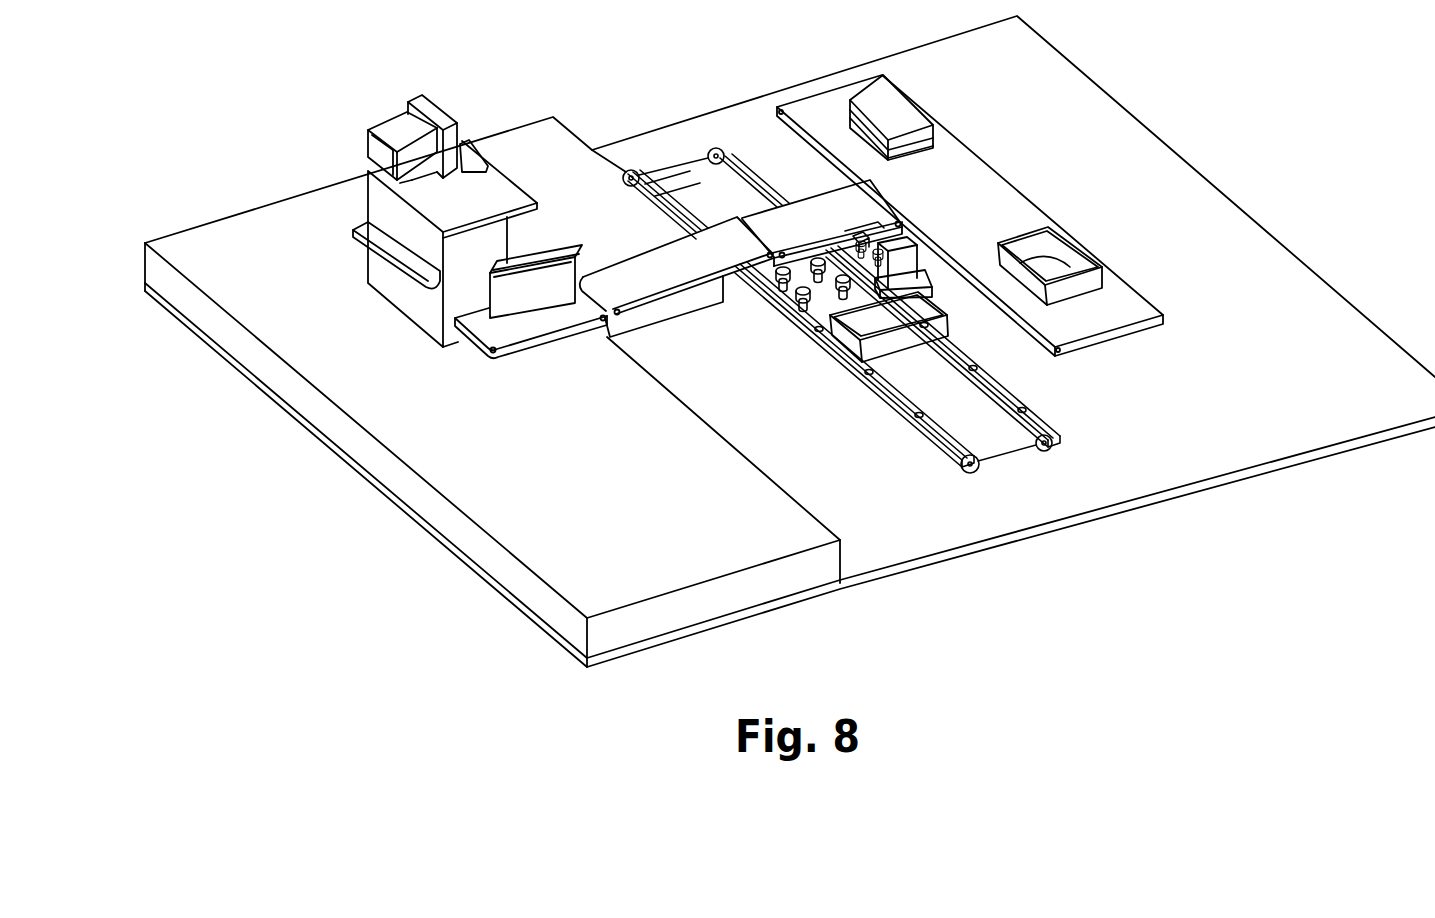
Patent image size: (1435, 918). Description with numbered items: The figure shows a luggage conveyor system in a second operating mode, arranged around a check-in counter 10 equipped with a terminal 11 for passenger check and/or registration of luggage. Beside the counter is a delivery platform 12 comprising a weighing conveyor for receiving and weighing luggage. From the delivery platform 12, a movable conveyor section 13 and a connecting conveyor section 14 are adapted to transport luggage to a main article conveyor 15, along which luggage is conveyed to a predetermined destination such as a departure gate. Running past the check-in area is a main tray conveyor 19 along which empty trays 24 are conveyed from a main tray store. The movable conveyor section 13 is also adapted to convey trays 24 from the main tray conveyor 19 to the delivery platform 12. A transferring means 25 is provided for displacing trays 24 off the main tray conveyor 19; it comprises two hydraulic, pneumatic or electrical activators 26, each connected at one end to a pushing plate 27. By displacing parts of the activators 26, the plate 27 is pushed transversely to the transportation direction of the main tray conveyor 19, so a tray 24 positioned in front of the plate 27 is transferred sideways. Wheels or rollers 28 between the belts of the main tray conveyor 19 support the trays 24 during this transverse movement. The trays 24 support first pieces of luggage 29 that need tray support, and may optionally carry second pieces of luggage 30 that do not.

The check-in counter 10 is at (352, 143).
The terminal 11 is at (432, 118).
The delivery platform 12 is at (502, 333).
The movable conveyor section 13 is at (677, 268).
The connecting conveyor section 14 is at (794, 221).
The main article conveyor 15 is at (991, 196).
The main tray conveyor 19 is at (1033, 407).
The tray 24 is at (1073, 260).
The transferring means 25 is at (912, 268).
The activator 26 is at (903, 330).
The pushing plate 27 is at (872, 258).
The rollers 28 is at (817, 308).
The first piece of luggage 29 is at (1062, 273).
The second piece of luggage 30 is at (528, 302).